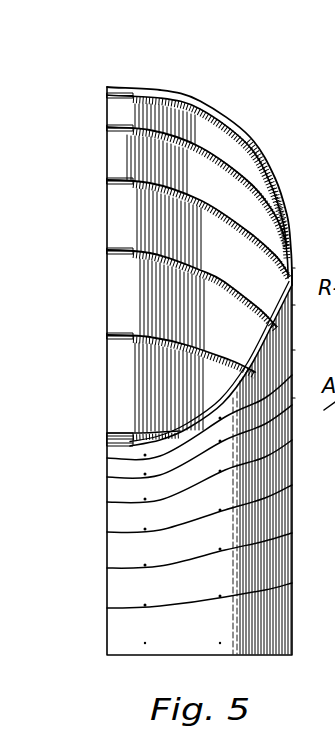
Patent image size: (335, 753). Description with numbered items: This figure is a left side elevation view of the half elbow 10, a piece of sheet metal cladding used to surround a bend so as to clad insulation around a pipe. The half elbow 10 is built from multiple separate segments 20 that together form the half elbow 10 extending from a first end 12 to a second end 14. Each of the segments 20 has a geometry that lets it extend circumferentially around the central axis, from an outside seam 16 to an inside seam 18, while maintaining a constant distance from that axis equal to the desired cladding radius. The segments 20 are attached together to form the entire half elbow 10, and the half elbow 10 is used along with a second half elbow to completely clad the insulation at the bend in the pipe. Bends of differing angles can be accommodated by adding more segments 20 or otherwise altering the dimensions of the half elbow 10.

The half elbow 10 is at (221, 85).
The first end 12 is at (250, 148).
The second end 14 is at (270, 655).
The outside seam 16 is at (107, 207).
The inside seam 18 is at (107, 555).
The segments 20 is at (277, 496).